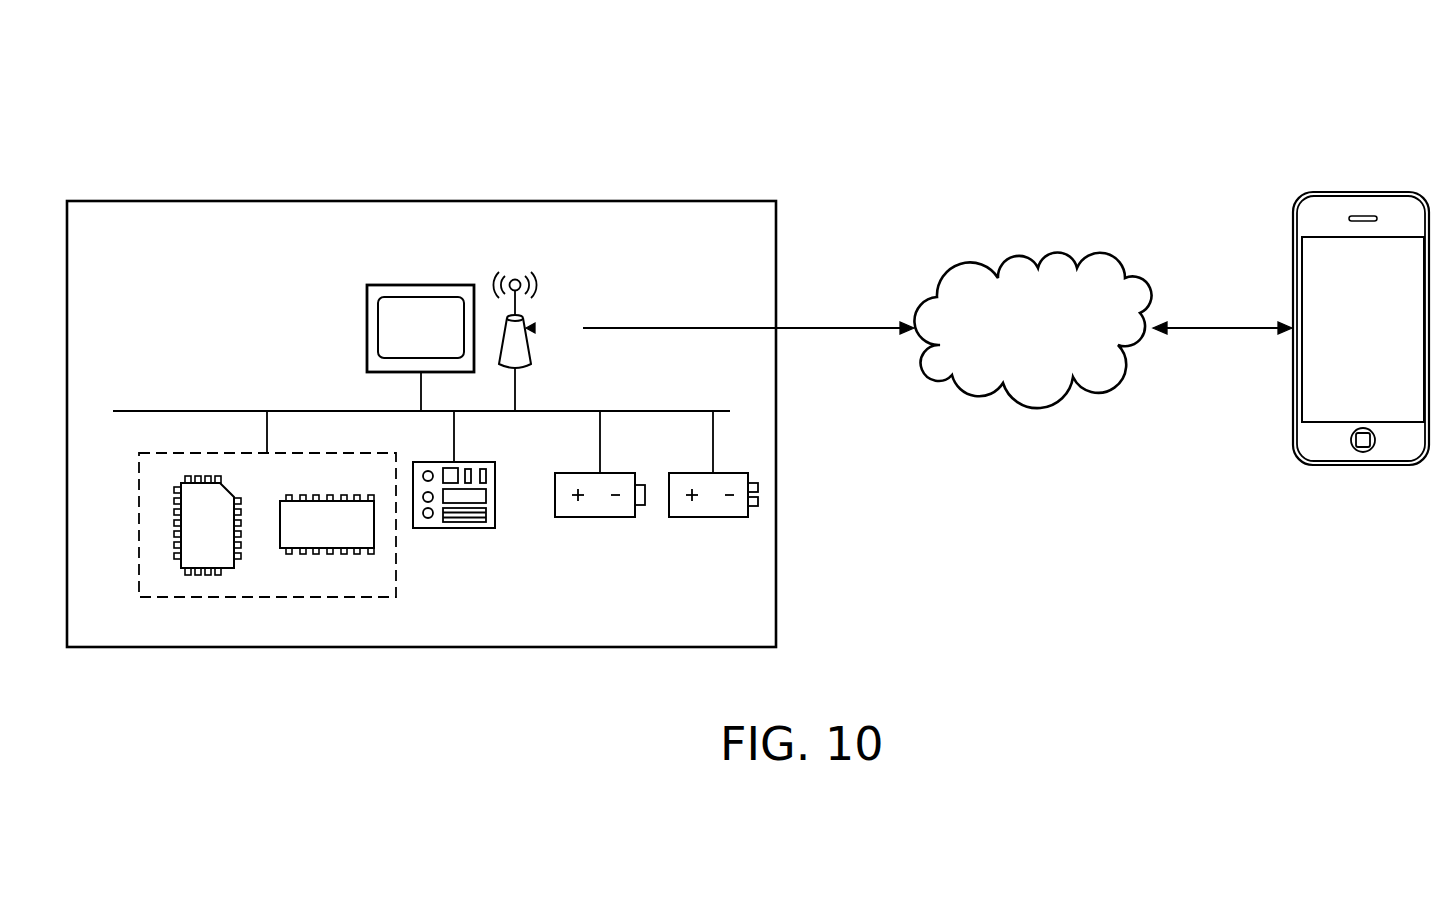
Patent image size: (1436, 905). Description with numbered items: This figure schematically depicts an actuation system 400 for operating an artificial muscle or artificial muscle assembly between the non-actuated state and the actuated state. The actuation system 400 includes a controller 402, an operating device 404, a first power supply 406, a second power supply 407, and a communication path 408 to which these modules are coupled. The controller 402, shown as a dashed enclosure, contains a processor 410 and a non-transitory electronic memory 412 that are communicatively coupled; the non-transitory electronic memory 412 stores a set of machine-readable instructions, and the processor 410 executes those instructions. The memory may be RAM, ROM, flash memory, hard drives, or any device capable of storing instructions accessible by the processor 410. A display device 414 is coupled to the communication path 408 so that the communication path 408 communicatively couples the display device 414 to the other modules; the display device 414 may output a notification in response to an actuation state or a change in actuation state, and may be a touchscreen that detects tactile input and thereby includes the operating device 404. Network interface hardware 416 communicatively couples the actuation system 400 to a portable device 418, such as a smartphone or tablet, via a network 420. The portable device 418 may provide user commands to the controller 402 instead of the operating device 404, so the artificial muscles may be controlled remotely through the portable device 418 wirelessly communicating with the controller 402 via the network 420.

The actuation system 400 is at (476, 104).
The controller 402 is at (137, 530).
The operating device 404 is at (455, 528).
The first power supply 406 is at (595, 517).
The second power supply 407 is at (710, 517).
The communication path 408 is at (137, 410).
The processor 410 is at (207, 575).
The non-transitory electronic memory 412 is at (337, 554).
The display device 414 is at (421, 285).
The network interface hardware 416 is at (532, 362).
The portable device 418 is at (1365, 192).
The network 420 is at (1060, 252).